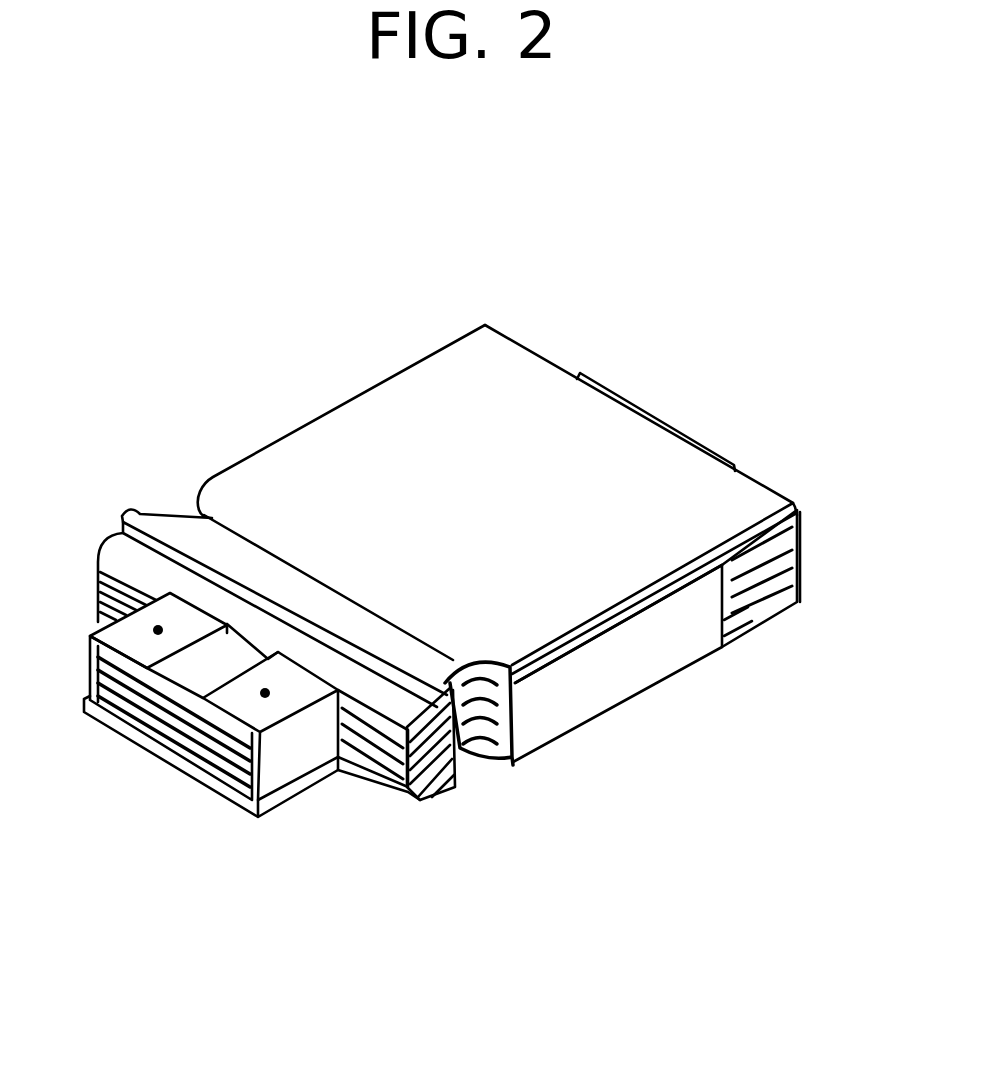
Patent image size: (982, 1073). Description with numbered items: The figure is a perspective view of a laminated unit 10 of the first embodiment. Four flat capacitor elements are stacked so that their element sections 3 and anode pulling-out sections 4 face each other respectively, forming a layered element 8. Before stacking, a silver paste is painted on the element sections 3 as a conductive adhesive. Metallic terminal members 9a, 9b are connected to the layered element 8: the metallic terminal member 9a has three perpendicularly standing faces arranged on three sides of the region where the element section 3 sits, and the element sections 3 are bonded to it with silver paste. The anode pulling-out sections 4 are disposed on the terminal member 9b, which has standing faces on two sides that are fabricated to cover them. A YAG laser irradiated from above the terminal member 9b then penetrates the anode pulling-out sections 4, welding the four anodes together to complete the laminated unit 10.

The element section 3 is at (467, 433).
The anode pulling-out section 4 is at (195, 678).
The layered element 8 is at (253, 470).
The metallic terminal member 9a is at (670, 425).
The terminal member 9b is at (293, 762).
The laminated unit 10 is at (744, 603).